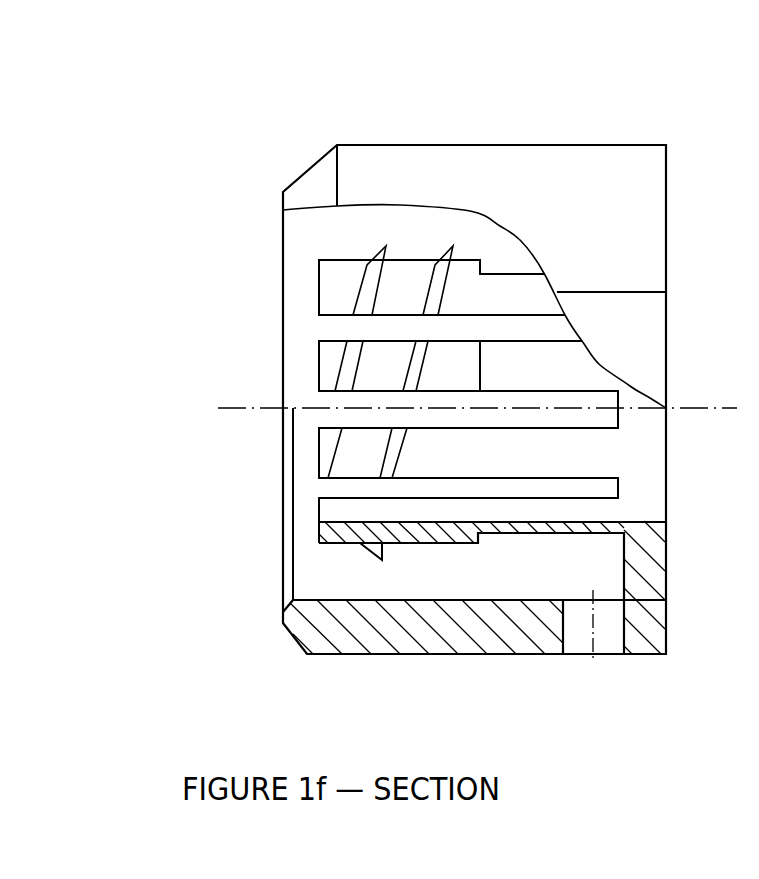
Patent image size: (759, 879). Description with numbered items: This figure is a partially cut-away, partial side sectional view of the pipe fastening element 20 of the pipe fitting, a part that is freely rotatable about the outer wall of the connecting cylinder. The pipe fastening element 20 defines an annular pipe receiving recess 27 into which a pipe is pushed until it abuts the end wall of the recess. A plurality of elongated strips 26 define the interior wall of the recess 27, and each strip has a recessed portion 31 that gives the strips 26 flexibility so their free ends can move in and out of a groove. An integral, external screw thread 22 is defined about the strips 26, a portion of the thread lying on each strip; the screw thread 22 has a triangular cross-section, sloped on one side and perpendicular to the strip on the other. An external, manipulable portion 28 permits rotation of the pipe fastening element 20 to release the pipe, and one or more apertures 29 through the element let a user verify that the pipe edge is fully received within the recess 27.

The pipe fastening element 20 is at (647, 110).
The external screw thread 22 is at (330, 438).
The elongated strips 26 is at (328, 508).
The annular pipe receiving recess 27 is at (494, 562).
The external manipulable portion 28 is at (455, 150).
The apertures 29 is at (607, 630).
The recessed portion 31 is at (585, 533).